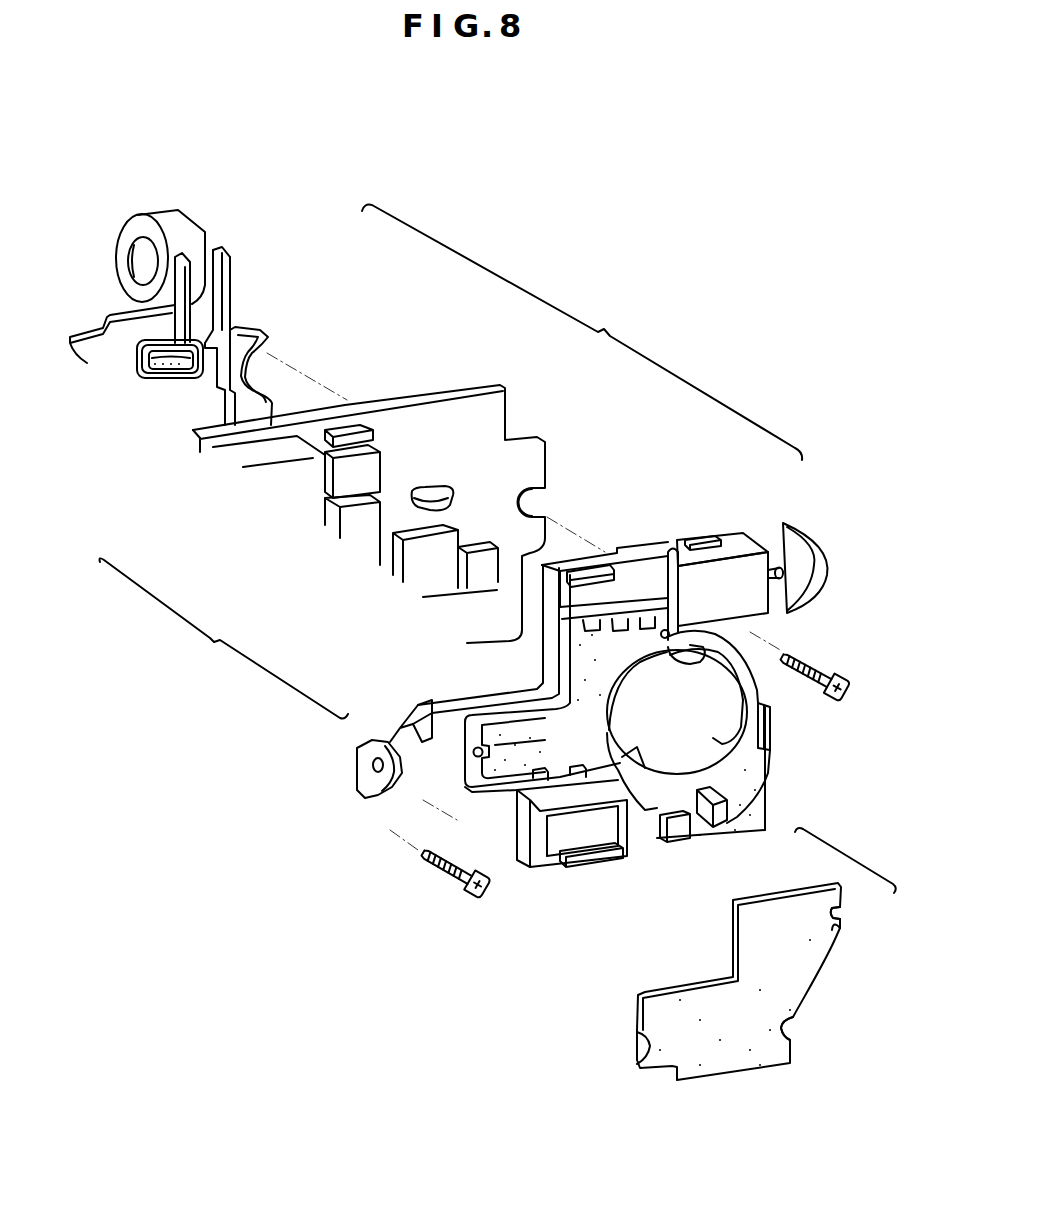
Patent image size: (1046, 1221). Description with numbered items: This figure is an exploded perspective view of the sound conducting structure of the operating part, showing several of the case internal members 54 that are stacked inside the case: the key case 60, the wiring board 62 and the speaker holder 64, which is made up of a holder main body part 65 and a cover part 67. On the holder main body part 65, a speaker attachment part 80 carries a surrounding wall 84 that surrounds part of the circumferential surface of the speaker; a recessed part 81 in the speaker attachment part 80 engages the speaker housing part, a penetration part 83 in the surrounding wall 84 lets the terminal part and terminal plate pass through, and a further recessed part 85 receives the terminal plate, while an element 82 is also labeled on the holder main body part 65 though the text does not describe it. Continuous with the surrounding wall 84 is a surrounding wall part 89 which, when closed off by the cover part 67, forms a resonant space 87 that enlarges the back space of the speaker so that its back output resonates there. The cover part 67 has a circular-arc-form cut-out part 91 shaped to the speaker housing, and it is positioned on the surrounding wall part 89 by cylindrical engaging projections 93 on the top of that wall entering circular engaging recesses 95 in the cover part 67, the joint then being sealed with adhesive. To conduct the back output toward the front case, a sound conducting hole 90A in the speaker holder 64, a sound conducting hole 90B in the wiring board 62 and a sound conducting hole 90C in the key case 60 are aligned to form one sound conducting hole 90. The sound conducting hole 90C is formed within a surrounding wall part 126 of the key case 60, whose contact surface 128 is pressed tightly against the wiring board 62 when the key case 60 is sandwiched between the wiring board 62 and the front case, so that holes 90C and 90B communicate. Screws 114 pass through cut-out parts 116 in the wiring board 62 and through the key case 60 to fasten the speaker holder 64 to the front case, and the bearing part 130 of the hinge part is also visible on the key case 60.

The case internal members 54 is at (582, 332).
The key case 60 is at (237, 328).
The wiring board 62 is at (482, 387).
The speaker holder 64 is at (845, 858).
The holder main body part 65 is at (752, 827).
The cover part 67 is at (840, 882).
The speaker attachment part 80 is at (750, 735).
The recessed part 81 is at (625, 745).
The connector 82 is at (728, 542).
The penetration part 83 is at (707, 806).
The surrounding wall 84 is at (742, 728).
The recessed part 85 is at (672, 795).
The resonant space 87 is at (532, 747).
The surrounding wall part 89 is at (487, 703).
The sound conducting hole 90 is at (224, 638).
The sound conducting hole 90A is at (667, 645).
The sound conducting hole 90B is at (412, 500).
The sound conducting hole 90C is at (187, 385).
The cut-out part 91 is at (788, 1030).
The engaging projections 93 is at (668, 553).
The engaging recesses 95 is at (833, 927).
The screws 114 is at (806, 668).
The cut-out parts 116 is at (546, 486).
The surrounding wall part 126 is at (140, 372).
The contact surface 128 is at (158, 378).
The bearing part 130 is at (168, 215).